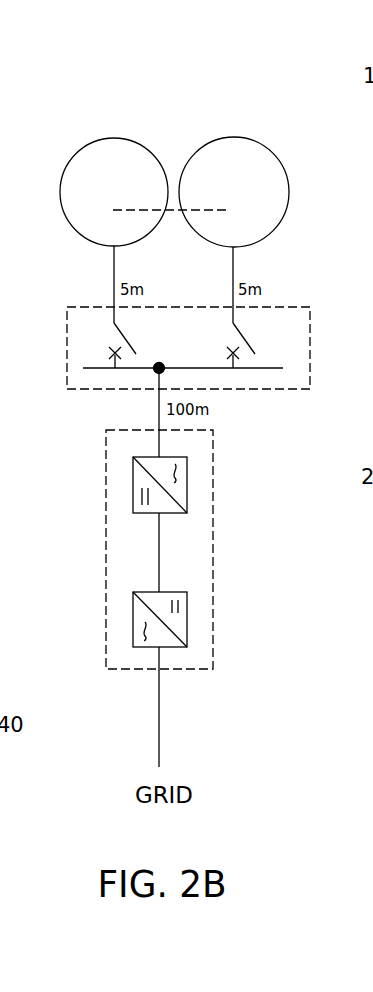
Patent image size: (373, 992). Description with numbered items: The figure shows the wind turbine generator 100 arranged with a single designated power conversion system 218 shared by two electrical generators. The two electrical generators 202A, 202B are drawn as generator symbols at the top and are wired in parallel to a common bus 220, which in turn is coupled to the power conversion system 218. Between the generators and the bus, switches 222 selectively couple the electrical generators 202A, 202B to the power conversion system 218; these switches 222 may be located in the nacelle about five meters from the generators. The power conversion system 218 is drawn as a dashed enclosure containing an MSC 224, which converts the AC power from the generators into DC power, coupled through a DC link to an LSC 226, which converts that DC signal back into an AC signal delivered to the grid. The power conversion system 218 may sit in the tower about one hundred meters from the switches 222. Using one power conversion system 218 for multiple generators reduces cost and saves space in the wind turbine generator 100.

The wind turbine generator 100 is at (110, 118).
The electrical generator 202A is at (118, 138).
The electrical generator 202B is at (266, 149).
The switches 222 is at (298, 307).
The bus 220 is at (262, 368).
The power conversion system 218 is at (213, 558).
The MSC 224 is at (133, 470).
The LSC 226 is at (133, 606).